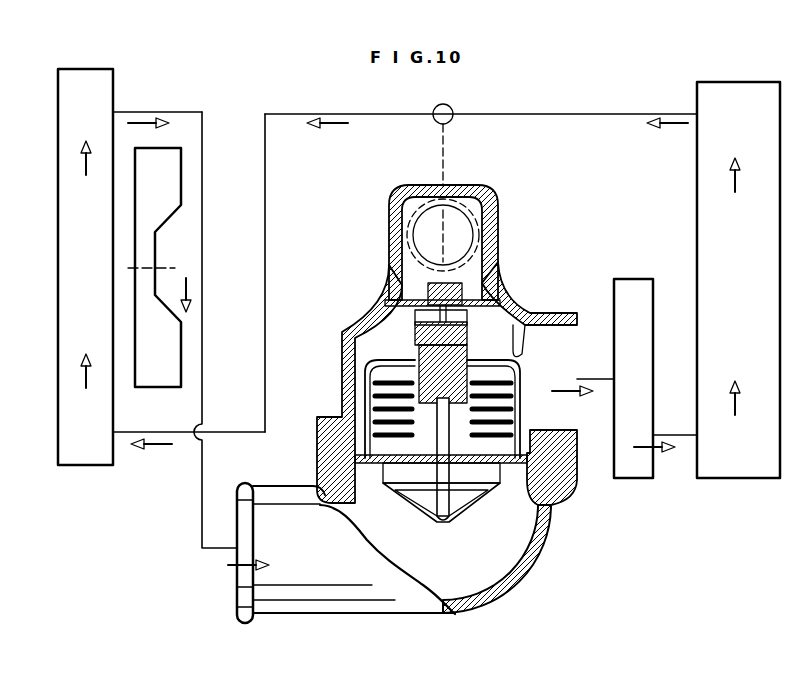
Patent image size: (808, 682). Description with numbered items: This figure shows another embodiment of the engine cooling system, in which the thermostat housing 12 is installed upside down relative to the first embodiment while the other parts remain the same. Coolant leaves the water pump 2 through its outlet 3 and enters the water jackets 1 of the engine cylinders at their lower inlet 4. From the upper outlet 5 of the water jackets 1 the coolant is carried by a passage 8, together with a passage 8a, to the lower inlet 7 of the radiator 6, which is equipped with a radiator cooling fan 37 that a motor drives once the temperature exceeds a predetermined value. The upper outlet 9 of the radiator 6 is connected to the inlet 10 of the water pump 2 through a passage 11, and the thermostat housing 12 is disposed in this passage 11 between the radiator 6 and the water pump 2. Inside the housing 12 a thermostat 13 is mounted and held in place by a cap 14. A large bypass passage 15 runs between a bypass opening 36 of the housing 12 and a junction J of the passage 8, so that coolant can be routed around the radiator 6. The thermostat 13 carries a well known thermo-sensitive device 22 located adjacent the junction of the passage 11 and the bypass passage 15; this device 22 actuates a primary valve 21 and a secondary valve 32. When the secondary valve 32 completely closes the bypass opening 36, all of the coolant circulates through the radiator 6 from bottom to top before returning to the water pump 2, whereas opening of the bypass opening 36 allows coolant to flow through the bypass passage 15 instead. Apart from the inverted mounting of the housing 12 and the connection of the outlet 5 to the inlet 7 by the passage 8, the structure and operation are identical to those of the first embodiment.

The water jackets 1 is at (697, 177).
The water pump 2 is at (652, 279).
The outlet 3 is at (654, 435).
The lower inlet 4 is at (695, 438).
The upper outlet 5 is at (686, 100).
The radiator 6 is at (58, 178).
The lower inlet 7 is at (189, 444).
The passage 8 is at (574, 114).
The passage 8a is at (265, 185).
The upper outlet 9 is at (157, 108).
The inlet 10 is at (612, 379).
The passage 11 is at (202, 328).
The thermostat housing 12 is at (380, 302).
The thermostat 13 is at (368, 372).
The cap 14 is at (382, 617).
The bypass passage 15 is at (444, 157).
The primary valve 21 is at (500, 430).
The thermo-sensitive device 22 is at (415, 352).
The secondary valve 32 is at (355, 315).
The bypass opening 36 is at (470, 271).
The radiator cooling fan 37 is at (183, 210).
The junction J is at (452, 108).